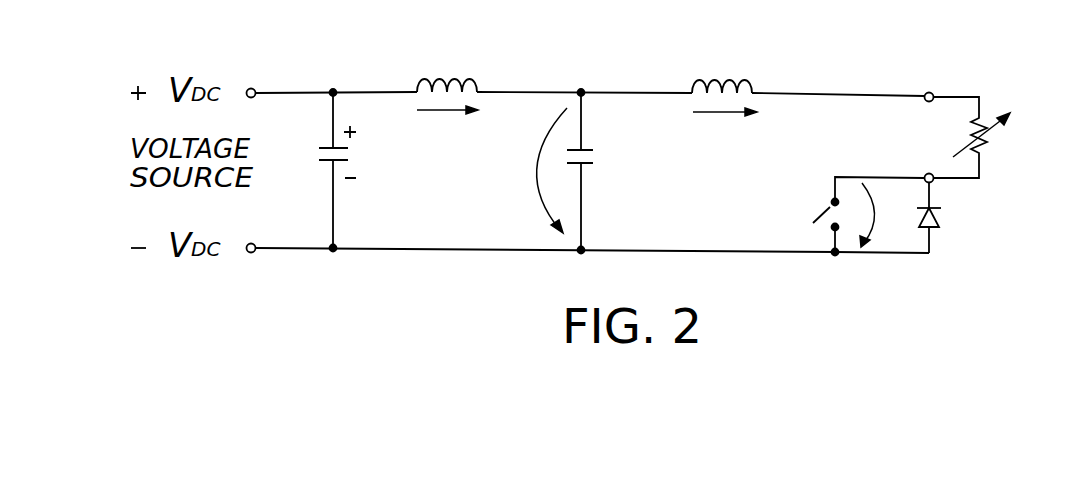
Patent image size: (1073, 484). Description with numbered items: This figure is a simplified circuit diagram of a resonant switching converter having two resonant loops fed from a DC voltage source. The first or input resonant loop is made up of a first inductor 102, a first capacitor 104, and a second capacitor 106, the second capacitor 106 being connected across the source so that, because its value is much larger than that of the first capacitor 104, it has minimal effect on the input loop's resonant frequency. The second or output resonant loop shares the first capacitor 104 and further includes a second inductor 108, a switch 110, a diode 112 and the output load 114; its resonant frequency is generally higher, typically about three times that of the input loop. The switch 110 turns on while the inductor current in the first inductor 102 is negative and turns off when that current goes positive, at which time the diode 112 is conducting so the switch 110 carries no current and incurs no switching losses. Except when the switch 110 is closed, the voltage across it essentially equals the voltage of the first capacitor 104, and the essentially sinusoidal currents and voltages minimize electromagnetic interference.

The first inductor 102 is at (478, 86).
The first capacitor 104 is at (590, 149).
The second capacitor 106 is at (326, 146).
The second inductor 108 is at (755, 88).
The switch 110 is at (830, 202).
The diode 112 is at (936, 230).
The output load 114 is at (972, 119).